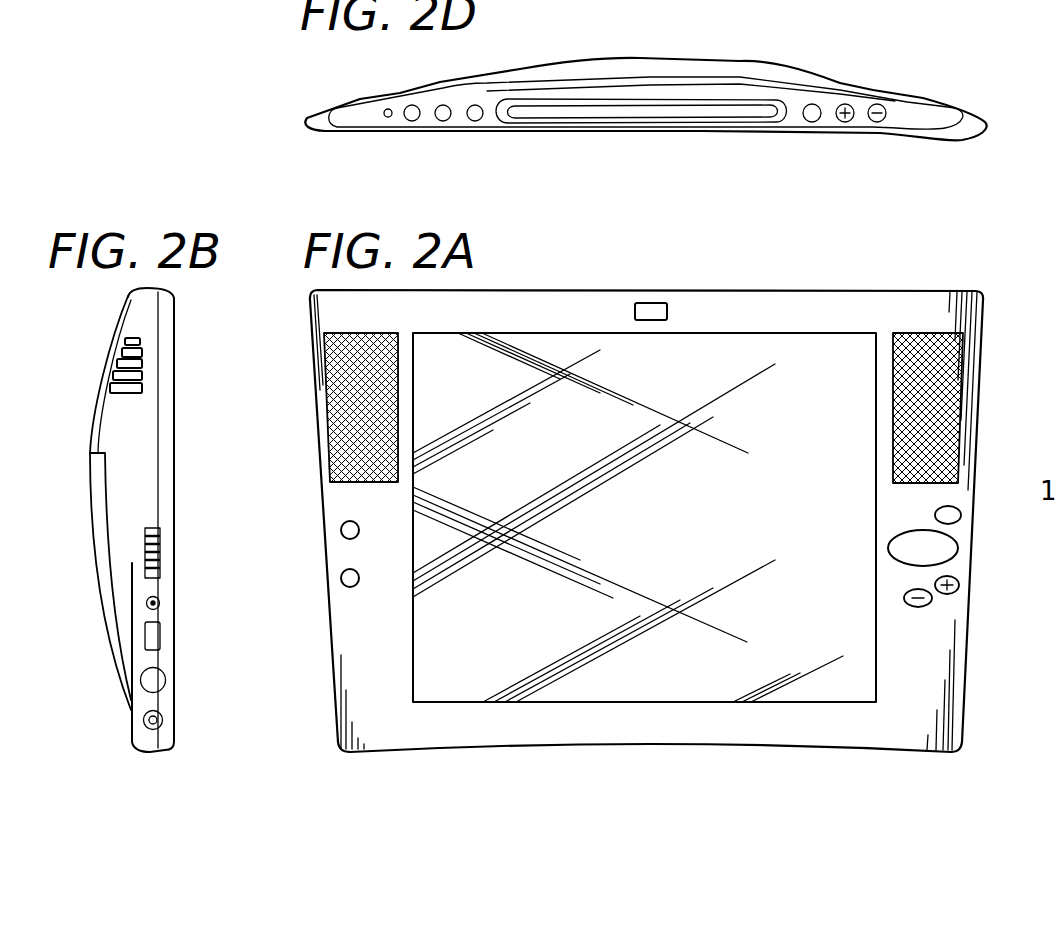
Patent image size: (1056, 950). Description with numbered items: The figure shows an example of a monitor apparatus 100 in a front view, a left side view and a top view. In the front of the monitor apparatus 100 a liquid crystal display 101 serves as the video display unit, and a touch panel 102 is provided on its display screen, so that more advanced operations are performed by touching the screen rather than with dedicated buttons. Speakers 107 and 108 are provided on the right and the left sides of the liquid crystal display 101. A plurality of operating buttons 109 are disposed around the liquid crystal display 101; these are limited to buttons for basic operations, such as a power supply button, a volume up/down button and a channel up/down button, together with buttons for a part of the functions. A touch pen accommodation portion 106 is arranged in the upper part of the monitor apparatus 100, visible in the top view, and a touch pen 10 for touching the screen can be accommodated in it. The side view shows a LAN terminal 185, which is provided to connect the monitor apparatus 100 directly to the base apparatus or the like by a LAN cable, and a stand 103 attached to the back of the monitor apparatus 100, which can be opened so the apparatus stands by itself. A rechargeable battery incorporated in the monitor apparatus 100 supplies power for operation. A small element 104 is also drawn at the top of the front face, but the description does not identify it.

In FIG. 2D, the touch pen 10 is at (520, 114).
In FIG. 2A, the monitor apparatus 100 is at (835, 748).
In FIG. 2A, the liquid crystal display 101 is at (433, 703).
In FIG. 2A, the touch panel 102 is at (555, 703).
In FIG. 2B, the stand 103 is at (102, 613).
In FIG. 2A, the sensor 104 is at (667, 312).
In FIG. 2D, the touch pen accommodation portion 106 is at (583, 117).
In FIG. 2A, the speaker 107 is at (327, 376).
In FIG. 2A, the speaker 108 is at (933, 333).
In FIG. 2A, the operating buttons 109 is at (958, 548).
In FIG. 2B, the LAN terminal 185 is at (160, 637).